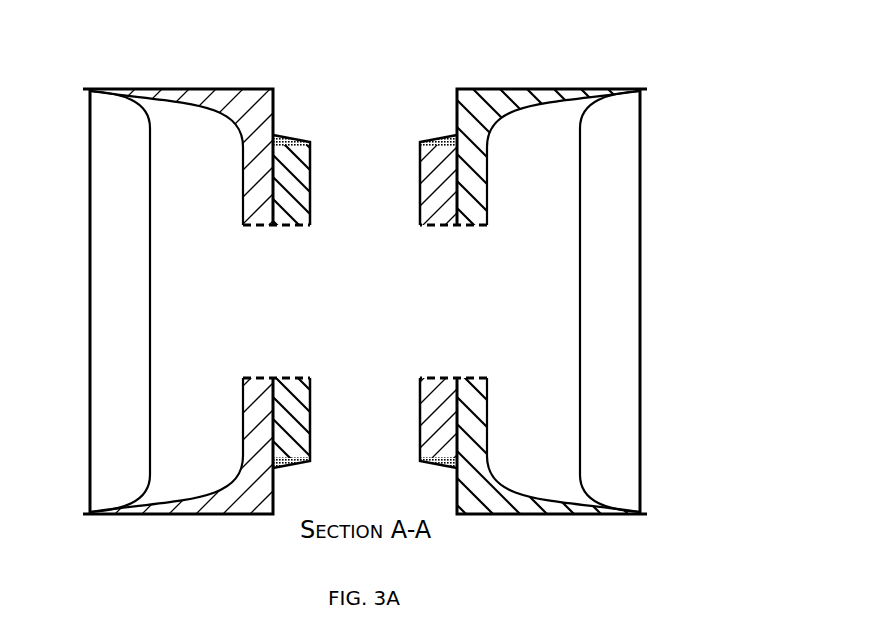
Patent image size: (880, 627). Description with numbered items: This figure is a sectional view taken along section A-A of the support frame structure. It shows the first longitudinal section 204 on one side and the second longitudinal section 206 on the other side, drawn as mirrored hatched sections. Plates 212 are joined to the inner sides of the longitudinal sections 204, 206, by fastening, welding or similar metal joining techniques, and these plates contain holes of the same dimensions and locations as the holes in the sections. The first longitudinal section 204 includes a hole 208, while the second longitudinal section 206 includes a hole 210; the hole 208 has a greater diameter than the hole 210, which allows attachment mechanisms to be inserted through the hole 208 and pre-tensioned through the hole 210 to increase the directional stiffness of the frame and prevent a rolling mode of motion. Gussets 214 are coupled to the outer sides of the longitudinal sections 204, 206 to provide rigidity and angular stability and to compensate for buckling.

The first longitudinal section 204 is at (113, 65).
The second longitudinal section 206 is at (606, 66).
The hole 208 is at (258, 377).
The hole 210 is at (438, 332).
The plate 212 is at (435, 168).
The gusset 214 is at (112, 287).